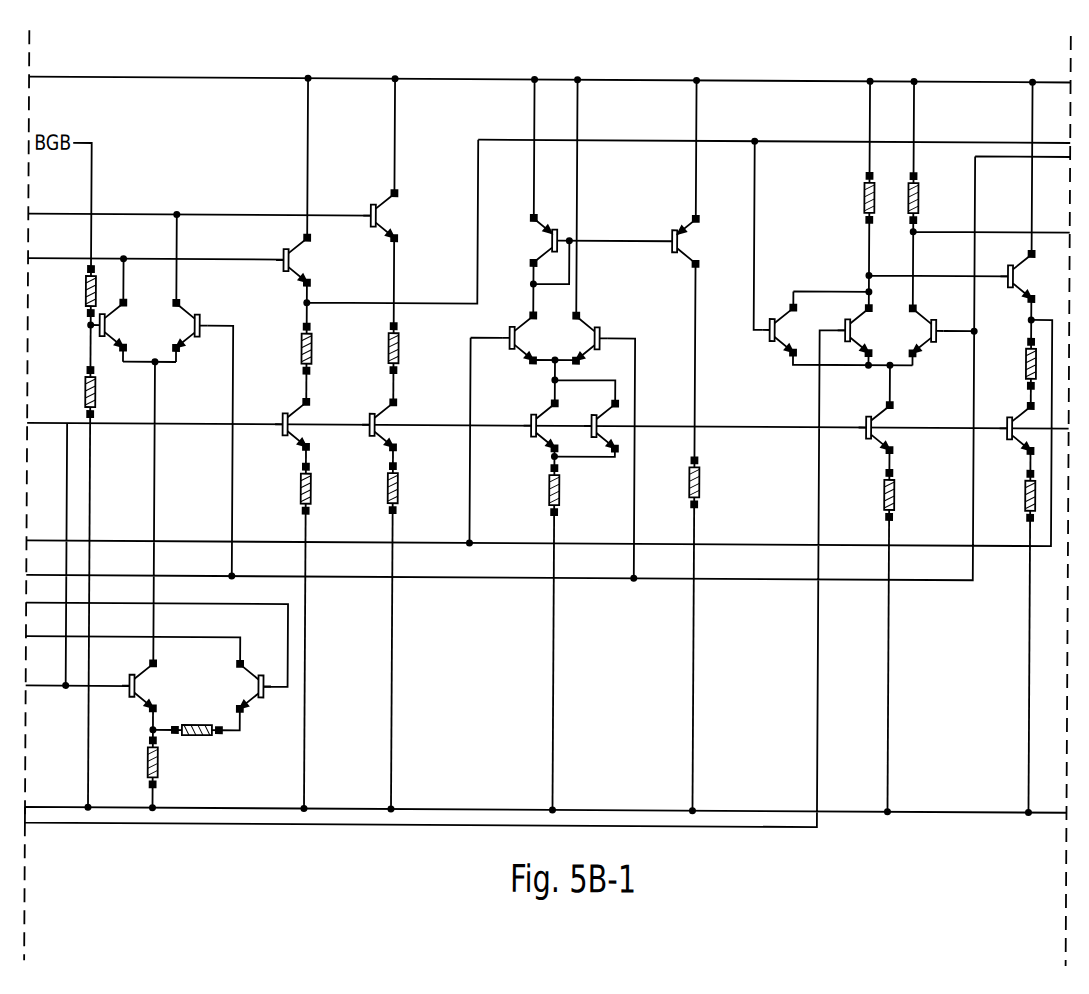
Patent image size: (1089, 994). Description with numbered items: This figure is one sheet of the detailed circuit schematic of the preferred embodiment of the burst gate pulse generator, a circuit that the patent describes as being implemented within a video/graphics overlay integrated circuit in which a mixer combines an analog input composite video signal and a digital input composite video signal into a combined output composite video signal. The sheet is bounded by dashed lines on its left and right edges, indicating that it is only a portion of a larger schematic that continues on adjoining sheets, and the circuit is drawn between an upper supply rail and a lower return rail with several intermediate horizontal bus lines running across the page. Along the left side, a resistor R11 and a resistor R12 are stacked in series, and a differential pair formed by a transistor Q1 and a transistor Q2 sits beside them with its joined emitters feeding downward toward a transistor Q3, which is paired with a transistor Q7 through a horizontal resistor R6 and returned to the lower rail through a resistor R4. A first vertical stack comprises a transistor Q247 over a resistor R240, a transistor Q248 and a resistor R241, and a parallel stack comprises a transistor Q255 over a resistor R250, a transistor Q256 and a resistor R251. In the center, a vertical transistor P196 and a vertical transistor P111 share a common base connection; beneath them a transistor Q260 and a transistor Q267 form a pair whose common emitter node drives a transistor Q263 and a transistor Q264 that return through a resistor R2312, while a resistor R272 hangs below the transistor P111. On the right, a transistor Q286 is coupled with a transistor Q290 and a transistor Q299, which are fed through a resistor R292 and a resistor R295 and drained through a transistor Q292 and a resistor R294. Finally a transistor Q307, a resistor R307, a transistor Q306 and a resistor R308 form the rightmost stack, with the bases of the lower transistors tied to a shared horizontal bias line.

The resistor R11 is at (73, 318).
The resistor R12 is at (70, 589).
The transistor Q1 is at (196, 395).
The transistor Q2 is at (115, 308).
The transistor Q3 is at (137, 689).
The transistor Q7 is at (245, 689).
The resistor R6 is at (185, 717).
The resistor R4 is at (137, 771).
The transistor Q247 is at (365, 200).
The resistor R240 is at (283, 361).
The transistor Q248 is at (281, 427).
The resistor R241 is at (280, 637).
The transistor Q255 is at (369, 200).
The resistor R250 is at (370, 362).
The transistor Q256 is at (368, 427).
The resistor R251 is at (367, 638).
The vertical PNP transistor P196 is at (584, 196).
The transistor Q260 is at (501, 429).
The transistor Q267 is at (605, 329).
The transistor Q263 is at (529, 428).
The transistor Q264 is at (586, 424).
The resistor R2312 is at (525, 639).
The vertical PNP transistor P111 is at (672, 267).
The resistor R272 is at (669, 635).
The transistor Q286 is at (827, 253).
The resistor R292 is at (912, 192).
The transistor Q290 is at (843, 331).
The resistor R295 is at (989, 192).
The transistor Q299 is at (943, 330).
The transistor Q292 is at (864, 417).
The resistor R294 is at (863, 643).
The transistor Q307 is at (1007, 208).
The resistor R307 is at (1008, 370).
The transistor Q306 is at (1005, 431).
The resistor R308 is at (1006, 643).